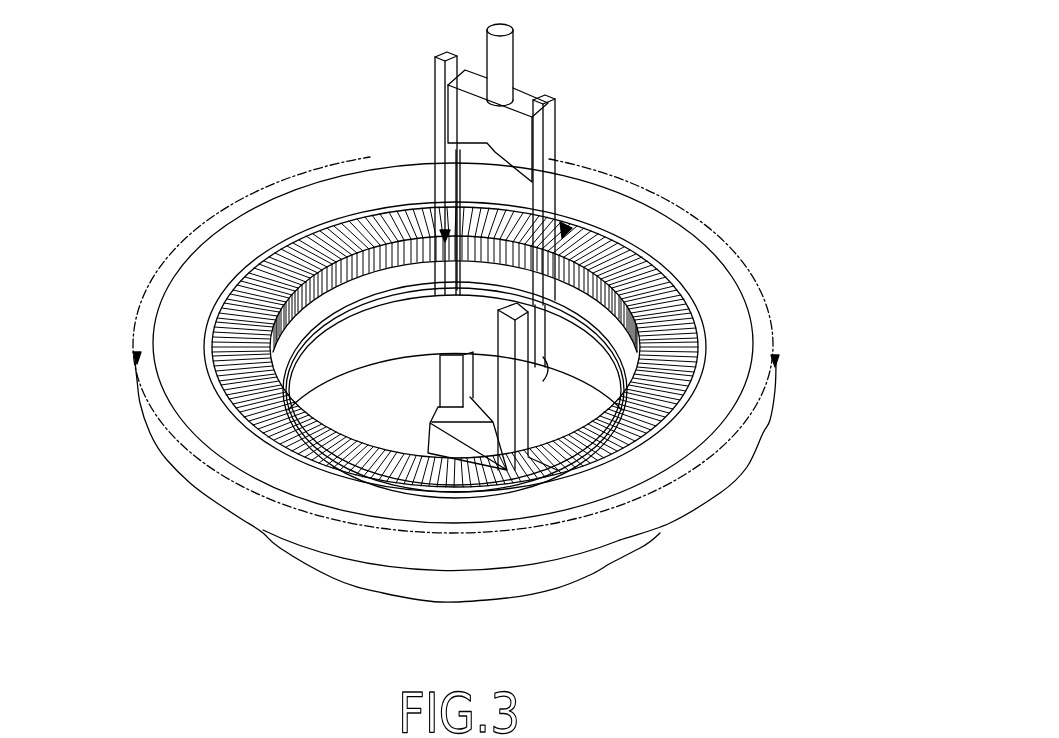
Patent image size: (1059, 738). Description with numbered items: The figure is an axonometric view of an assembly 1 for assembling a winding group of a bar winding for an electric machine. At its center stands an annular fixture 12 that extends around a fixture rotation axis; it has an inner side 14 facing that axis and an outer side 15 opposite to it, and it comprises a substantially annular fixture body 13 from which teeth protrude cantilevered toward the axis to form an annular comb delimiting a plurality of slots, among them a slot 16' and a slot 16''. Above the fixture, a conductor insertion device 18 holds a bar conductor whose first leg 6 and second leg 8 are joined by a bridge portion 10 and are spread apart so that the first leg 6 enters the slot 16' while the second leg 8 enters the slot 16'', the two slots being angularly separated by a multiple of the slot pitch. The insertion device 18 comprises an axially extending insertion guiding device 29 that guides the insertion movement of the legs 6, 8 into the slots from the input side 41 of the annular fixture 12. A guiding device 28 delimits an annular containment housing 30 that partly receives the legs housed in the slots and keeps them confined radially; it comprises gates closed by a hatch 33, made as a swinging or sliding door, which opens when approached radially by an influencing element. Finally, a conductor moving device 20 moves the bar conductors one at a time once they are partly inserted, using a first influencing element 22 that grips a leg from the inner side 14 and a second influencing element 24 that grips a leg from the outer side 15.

The assembly 1 is at (861, 480).
The first leg 6 is at (440, 235).
The second leg 8 is at (610, 335).
The bridge portion 10 is at (488, 140).
The annular fixture 12 is at (722, 405).
The fixture body 13 is at (537, 503).
The inner side 14 is at (304, 342).
The outer side 15 is at (110, 330).
The slot 16' is at (330, 180).
The slot 16'' is at (618, 168).
The conductor insertion device 18 is at (517, 100).
The conductor moving device 20 is at (487, 423).
The first influencing element 22 is at (548, 290).
The second influencing element 24 is at (440, 232).
The guiding device 28 is at (638, 548).
The insertion guiding device 29 is at (441, 57).
The annular containment housing 30 is at (533, 318).
The hatch 33 is at (427, 257).
The input side 41 is at (737, 310).